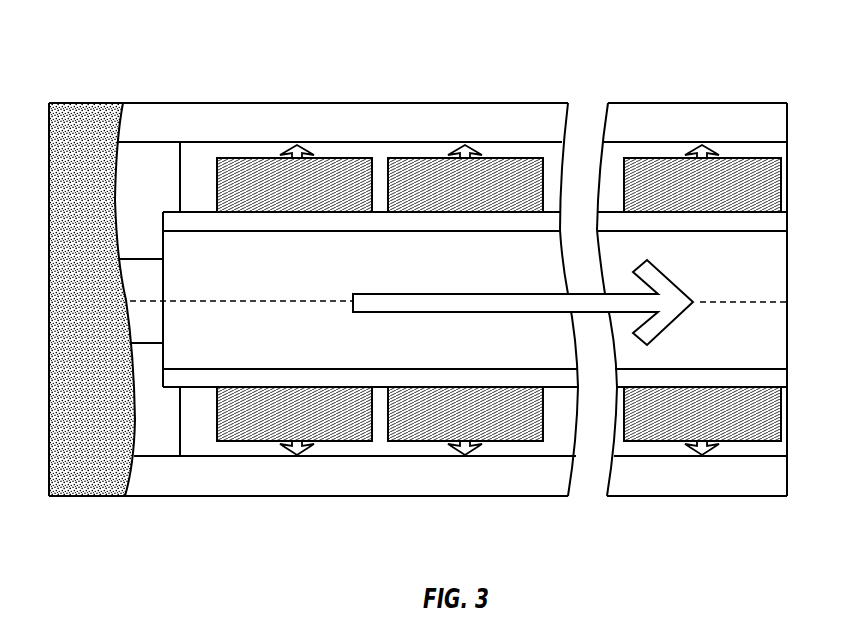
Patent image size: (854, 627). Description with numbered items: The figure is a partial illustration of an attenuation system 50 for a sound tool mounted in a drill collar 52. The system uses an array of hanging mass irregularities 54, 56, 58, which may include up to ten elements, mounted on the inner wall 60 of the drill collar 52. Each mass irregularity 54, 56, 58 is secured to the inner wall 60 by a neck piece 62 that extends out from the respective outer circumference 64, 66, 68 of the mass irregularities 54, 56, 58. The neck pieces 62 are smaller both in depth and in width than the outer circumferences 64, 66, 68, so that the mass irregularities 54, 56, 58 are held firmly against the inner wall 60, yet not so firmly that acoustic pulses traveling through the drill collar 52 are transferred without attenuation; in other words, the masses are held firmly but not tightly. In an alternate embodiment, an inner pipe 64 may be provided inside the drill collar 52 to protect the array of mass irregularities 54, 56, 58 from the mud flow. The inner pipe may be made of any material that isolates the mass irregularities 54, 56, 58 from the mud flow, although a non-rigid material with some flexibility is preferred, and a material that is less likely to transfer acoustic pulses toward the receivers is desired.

The attenuation system 50 is at (78, 78).
The drill collar 52 is at (418, 271).
The mass irregularity 54 is at (281, 299).
The mass irregularity 56 is at (451, 299).
The mass irregularity 58 is at (687, 300).
The inner wall 60 is at (474, 299).
The neck piece 62 is at (505, 298).
The outer circumference 64 is at (497, 299).
The outer circumference 66 is at (451, 299).
The outer circumference 68 is at (688, 298).